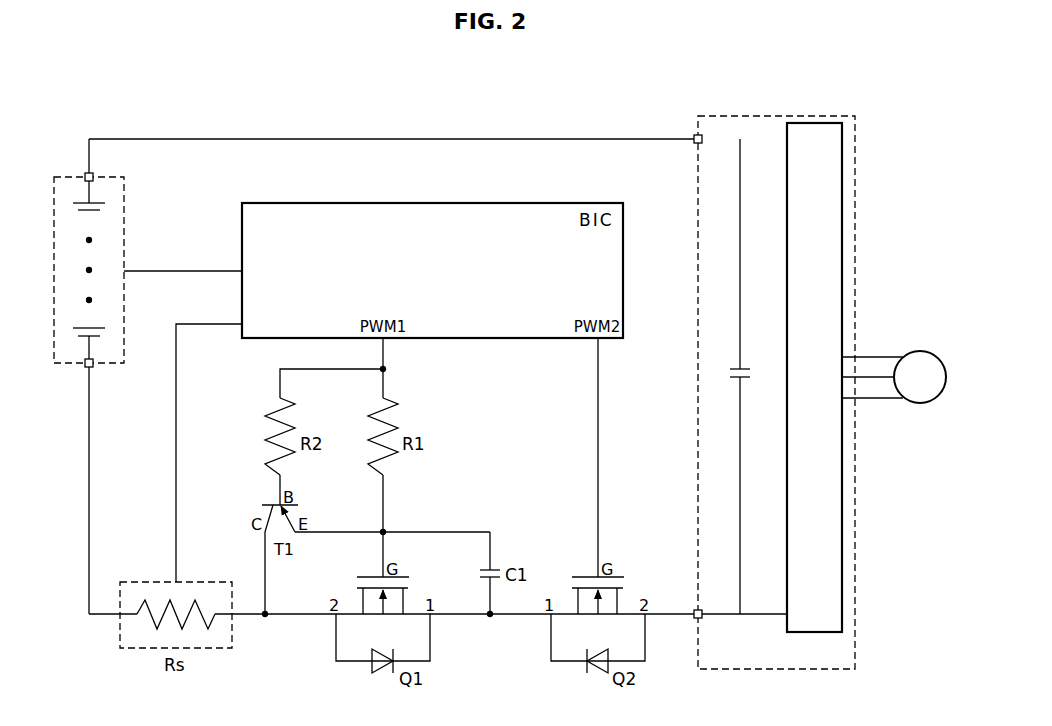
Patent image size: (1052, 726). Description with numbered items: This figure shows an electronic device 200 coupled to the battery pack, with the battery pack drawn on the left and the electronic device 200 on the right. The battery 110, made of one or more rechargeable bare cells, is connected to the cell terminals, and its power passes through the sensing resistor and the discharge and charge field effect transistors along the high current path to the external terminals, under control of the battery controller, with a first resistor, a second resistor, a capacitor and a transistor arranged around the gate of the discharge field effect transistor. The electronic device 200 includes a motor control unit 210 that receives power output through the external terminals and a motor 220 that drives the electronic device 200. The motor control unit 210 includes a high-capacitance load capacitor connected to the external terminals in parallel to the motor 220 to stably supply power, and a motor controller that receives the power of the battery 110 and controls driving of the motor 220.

The battery 110 is at (54, 177).
The electronic device 200 is at (889, 97).
The motor control unit 210 is at (768, 116).
The motor 220 is at (920, 351).